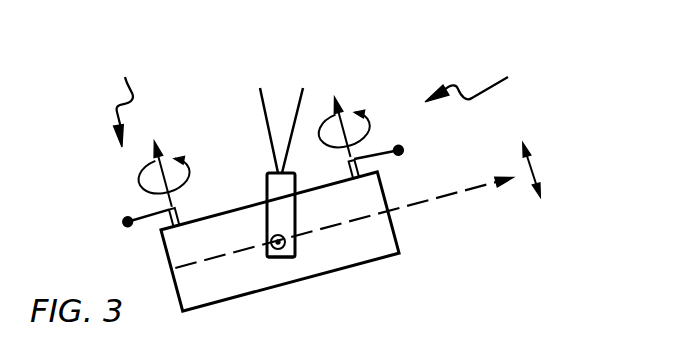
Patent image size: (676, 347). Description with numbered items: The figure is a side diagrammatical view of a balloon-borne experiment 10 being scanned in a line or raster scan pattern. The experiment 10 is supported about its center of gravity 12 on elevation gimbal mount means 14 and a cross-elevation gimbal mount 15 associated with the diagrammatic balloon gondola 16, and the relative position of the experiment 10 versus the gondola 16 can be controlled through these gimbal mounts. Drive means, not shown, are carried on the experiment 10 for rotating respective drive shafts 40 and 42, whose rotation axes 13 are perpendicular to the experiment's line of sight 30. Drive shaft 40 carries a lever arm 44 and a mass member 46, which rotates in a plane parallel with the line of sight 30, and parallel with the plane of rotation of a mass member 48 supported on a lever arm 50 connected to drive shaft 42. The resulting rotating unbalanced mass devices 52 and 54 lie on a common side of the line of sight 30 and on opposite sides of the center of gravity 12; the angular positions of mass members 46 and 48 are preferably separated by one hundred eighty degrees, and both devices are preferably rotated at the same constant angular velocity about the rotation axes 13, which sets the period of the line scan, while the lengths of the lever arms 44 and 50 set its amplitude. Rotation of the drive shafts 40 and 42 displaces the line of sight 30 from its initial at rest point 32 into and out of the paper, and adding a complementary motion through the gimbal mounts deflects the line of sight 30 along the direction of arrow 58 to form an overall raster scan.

The balloon-borne experiment 10 is at (297, 280).
The center of gravity 12 is at (266, 256).
The rotation axis 13 is at (243, 113).
The elevation gimbal mount means 14 is at (270, 240).
The cross-elevation gimbal mount 15 is at (293, 248).
The balloon gondola 16 is at (288, 207).
The line of sight 30 is at (430, 200).
The initial at rest point 32 is at (512, 181).
The drive shaft 40 is at (181, 212).
The drive shaft 42 is at (353, 167).
The lever arm 44 is at (148, 213).
The mass member 46 is at (128, 222).
The mass member 48 is at (398, 150).
The lever arm 50 is at (377, 153).
The RUM device 52 is at (494, 71).
The RUM device 54 is at (126, 91).
The arrow 58 is at (531, 166).